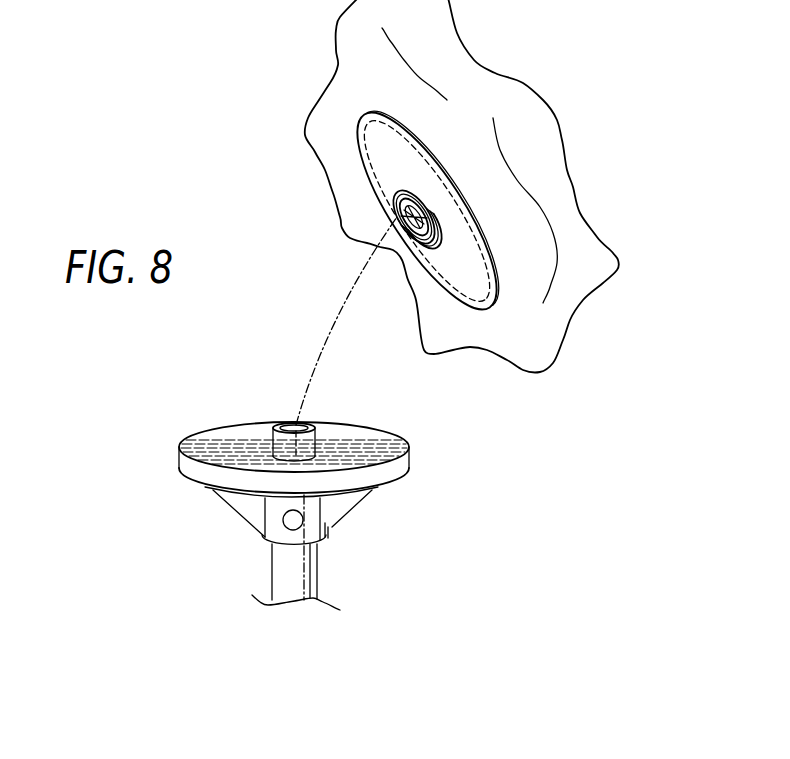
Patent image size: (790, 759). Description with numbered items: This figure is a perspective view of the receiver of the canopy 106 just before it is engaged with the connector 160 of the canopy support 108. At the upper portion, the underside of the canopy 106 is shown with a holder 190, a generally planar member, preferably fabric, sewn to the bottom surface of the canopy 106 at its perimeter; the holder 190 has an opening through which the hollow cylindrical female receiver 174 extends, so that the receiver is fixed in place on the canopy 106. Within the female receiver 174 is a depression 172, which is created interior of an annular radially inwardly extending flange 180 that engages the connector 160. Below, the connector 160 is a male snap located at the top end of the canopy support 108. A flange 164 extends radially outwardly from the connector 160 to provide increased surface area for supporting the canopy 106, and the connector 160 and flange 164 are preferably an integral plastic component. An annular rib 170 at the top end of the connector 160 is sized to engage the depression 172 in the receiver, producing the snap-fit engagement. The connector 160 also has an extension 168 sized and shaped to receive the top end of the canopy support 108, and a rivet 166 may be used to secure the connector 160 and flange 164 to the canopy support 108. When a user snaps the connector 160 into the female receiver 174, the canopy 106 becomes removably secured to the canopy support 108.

The canopy 106 is at (495, 103).
The holder 190 is at (382, 155).
The hollow cylindrical female receiver 174 is at (397, 191).
The depression 172 is at (412, 216).
The annular radially inwardly extending flange 180 is at (433, 252).
The annular rib 170 is at (277, 422).
The connector 160 is at (190, 447).
The flange 164 is at (183, 467).
The extension 168 is at (275, 532).
The rivet 166 is at (296, 521).
The canopy support 108 is at (318, 572).